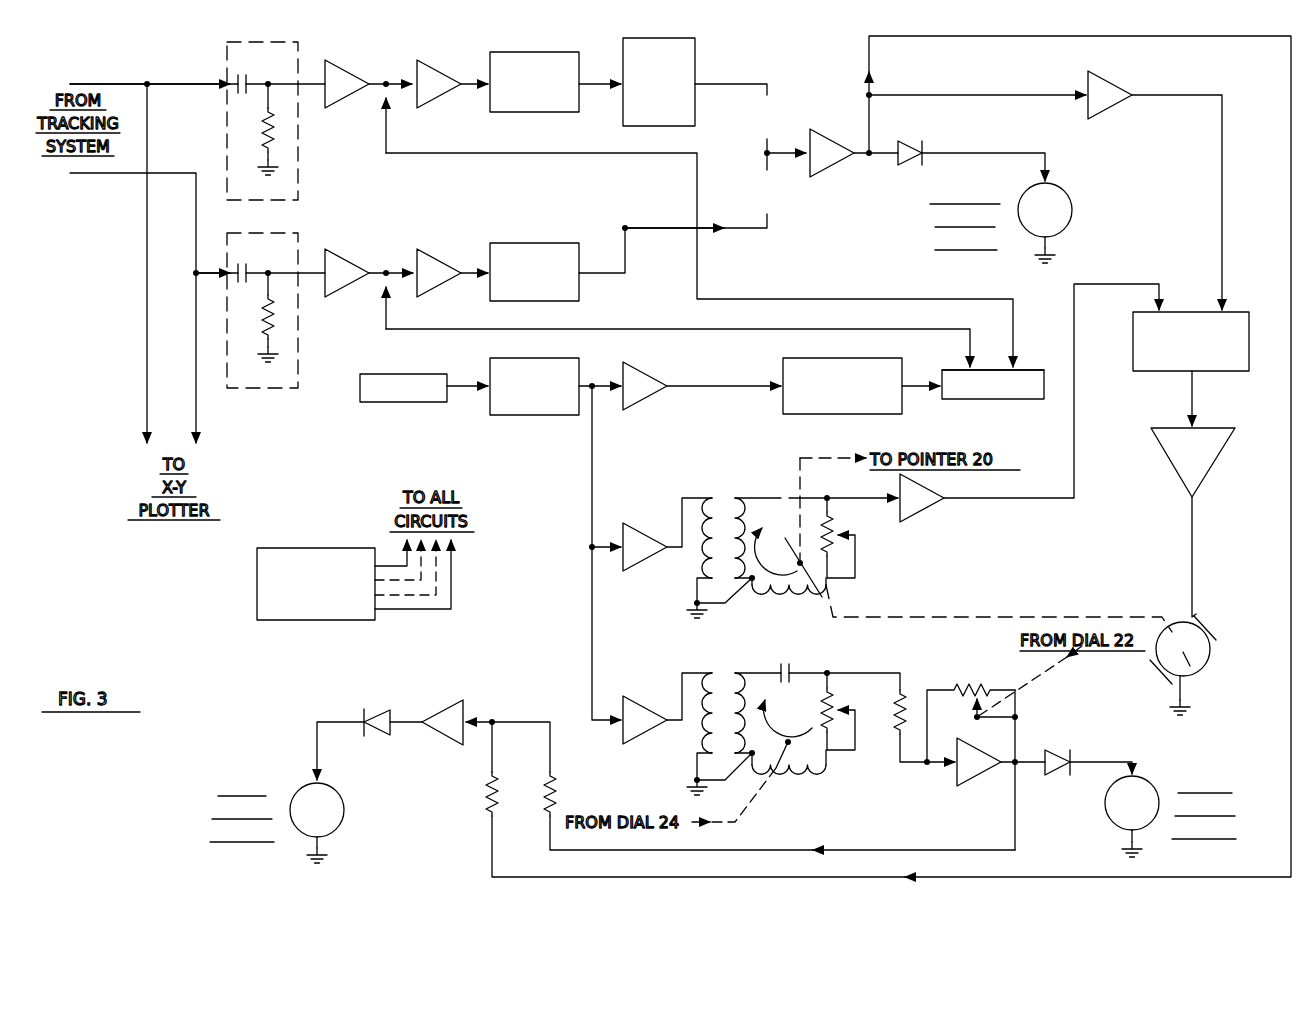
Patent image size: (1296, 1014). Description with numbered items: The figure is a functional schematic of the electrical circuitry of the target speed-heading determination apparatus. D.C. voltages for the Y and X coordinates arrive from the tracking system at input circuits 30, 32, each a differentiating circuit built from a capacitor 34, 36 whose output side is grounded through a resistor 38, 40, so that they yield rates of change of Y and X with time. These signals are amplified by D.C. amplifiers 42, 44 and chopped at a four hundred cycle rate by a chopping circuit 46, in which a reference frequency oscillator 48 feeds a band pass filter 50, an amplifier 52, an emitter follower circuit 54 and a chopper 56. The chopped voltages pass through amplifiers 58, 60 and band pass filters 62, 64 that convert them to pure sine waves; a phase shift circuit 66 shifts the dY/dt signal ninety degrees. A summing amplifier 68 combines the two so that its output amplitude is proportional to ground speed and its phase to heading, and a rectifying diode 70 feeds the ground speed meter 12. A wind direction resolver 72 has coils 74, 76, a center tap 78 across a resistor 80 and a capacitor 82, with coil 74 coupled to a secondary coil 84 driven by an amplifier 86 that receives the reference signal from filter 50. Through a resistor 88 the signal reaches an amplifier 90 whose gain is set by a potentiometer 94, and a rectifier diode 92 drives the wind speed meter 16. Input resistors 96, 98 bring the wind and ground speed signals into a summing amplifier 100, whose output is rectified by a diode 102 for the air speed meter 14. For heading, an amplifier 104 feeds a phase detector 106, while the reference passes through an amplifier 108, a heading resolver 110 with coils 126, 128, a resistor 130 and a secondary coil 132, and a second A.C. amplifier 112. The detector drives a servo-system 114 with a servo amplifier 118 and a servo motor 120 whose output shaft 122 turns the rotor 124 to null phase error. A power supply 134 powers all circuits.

The ground speed meter 12 is at (1060, 205).
The air speed meter 14 is at (305, 800).
The wind speed meter 16 is at (1145, 790).
The input circuit 30 is at (305, 42).
The input circuit 32 is at (306, 230).
The capacitor 34 is at (236, 88).
The capacitor 36 is at (236, 276).
The resistor 38 is at (278, 130).
The resistor 40 is at (278, 318).
The D.C. amplifier 42 is at (347, 80).
The D.C. amplifier 44 is at (348, 276).
The chopping circuit 46 is at (1028, 362).
The reference frequency oscillator 48 is at (400, 405).
The 400Hz band pass filter 50 is at (535, 416).
The amplifier 52 is at (640, 385).
The emitter follower circuit 54 is at (850, 415).
The 400Hz chopper 56 is at (985, 400).
The amplifier 58 is at (427, 80).
The amplifier 60 is at (425, 266).
The 400Hz band pass filter 62 is at (555, 70).
The 400Hz band pass filter 64 is at (493, 250).
The phase shift circuit 66 is at (683, 55).
The summing amplifier 68 is at (818, 150).
The rectifying diode 70 is at (905, 150).
The wind direction resolver 72 is at (838, 768).
The coil 74 is at (740, 690).
The coil 76 is at (780, 776).
The center tap 78 is at (855, 725).
The resistor 80 is at (822, 720).
The capacitor 82 is at (795, 672).
The secondary coil 84 is at (710, 692).
The amplifier 86 is at (632, 712).
The resistor 88 is at (905, 700).
The amplifier 90 is at (962, 765).
The rectifier diode 92 is at (1050, 750).
The potentiometer 94 is at (960, 688).
The input resistor 96 is at (552, 790).
The input resistor 98 is at (486, 790).
The summing amplifier 100 is at (448, 715).
The rectifying diode 102 is at (368, 715).
The amplifier 104 is at (1088, 92).
The 400Hz phase detector 106 is at (1226, 323).
The amplifier 108 is at (633, 538).
The heading resolver 110 is at (858, 578).
The second A.C. amplifier 112 is at (930, 505).
The servo-system 114 is at (1210, 585).
The servo amplifier 118 is at (1210, 475).
The servo motor 120 is at (1213, 660).
The output shaft 122 is at (978, 616).
The rotor 124 is at (786, 544).
The coil 126 is at (738, 505).
The coil 128 is at (788, 602).
The resistor 130 is at (840, 540).
The secondary coil 132 is at (710, 505).
The power supply 134 is at (257, 578).